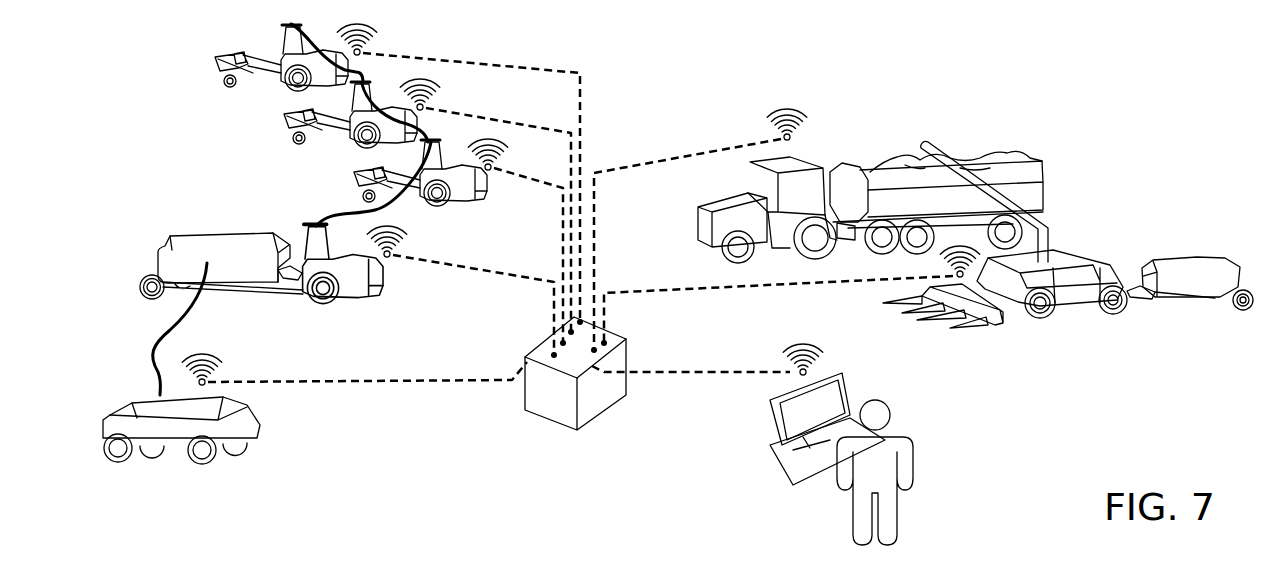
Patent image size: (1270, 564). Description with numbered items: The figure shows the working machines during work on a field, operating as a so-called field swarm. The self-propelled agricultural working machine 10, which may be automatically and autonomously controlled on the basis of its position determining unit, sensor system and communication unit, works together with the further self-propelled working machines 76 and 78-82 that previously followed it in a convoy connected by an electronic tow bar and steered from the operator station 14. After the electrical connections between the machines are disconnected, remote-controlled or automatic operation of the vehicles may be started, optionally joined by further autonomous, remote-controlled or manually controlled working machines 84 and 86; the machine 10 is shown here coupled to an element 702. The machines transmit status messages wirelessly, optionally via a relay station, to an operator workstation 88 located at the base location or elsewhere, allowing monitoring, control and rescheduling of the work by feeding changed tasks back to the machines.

The further self-propelled working machines 78-82 is at (192, 111).
The self-propelled working machine 76 is at (183, 257).
The working machine 84 is at (143, 407).
The operator station 14 is at (552, 397).
The working machine 86 is at (848, 99).
The self-propelled agricultural working machine 10 is at (1097, 353).
The trailer 702 is at (1178, 236).
The operator workstation 88 is at (914, 404).